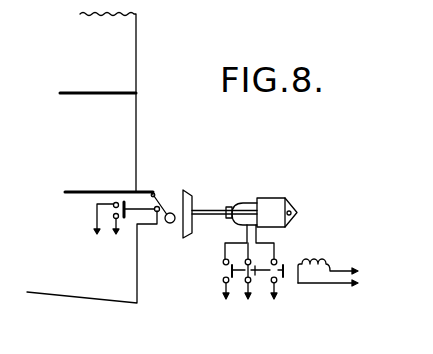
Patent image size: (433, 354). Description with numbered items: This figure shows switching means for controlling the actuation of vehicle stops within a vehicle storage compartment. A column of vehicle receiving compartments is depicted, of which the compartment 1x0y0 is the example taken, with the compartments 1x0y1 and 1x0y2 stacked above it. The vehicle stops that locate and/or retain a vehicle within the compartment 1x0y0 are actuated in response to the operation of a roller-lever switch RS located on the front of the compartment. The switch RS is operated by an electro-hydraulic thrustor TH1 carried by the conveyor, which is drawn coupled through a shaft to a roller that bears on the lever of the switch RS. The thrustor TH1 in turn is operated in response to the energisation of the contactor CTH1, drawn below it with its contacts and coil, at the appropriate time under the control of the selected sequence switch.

The roller-lever switch RS is at (165, 199).
The electro-hydraulic thrustor TH1 is at (278, 196).
The contactor CTH1 is at (219, 279).
The core line 1x0y2 is at (98, 103).
The core line 1x0y1 is at (104, 166).
The vehicle receiving compartment 1x0y0 is at (92, 257).